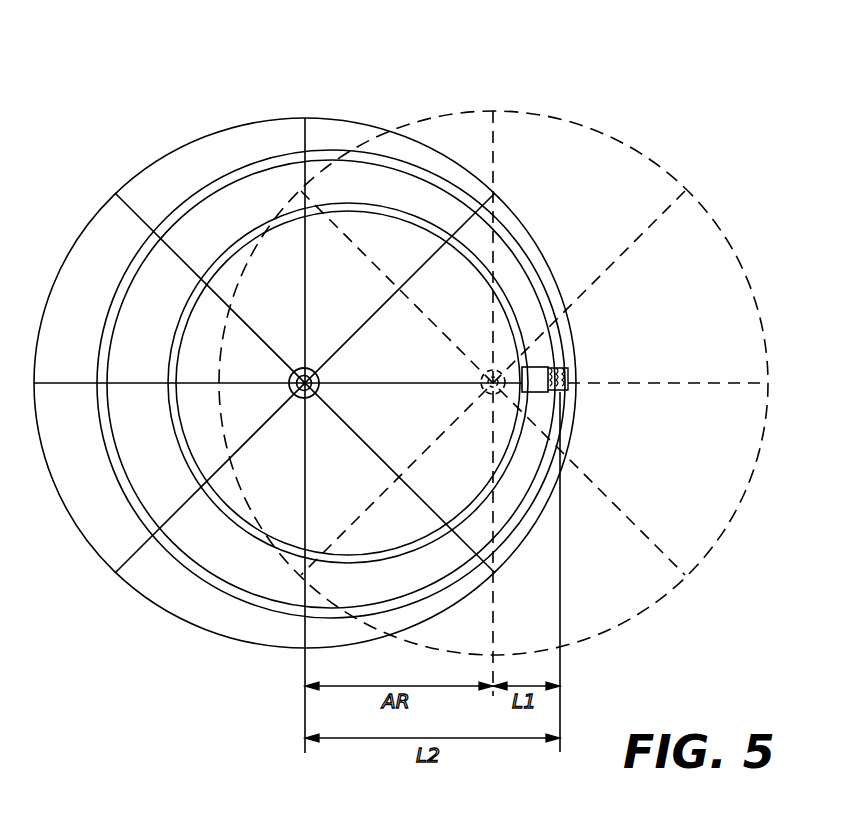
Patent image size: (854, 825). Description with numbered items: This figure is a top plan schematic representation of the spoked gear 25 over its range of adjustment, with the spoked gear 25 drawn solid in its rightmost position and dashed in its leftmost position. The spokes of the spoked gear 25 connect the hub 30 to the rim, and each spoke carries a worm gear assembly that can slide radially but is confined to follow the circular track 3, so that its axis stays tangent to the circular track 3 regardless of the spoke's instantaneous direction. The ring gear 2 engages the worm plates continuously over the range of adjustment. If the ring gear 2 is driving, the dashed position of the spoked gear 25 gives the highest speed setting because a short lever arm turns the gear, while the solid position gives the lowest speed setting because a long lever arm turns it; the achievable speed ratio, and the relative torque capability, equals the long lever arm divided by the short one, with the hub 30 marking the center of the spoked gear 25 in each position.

The spoked gear 25 is at (246, 120).
The ring gear 2 is at (215, 188).
The circular track 3 is at (247, 243).
The hub 30 is at (300, 398).